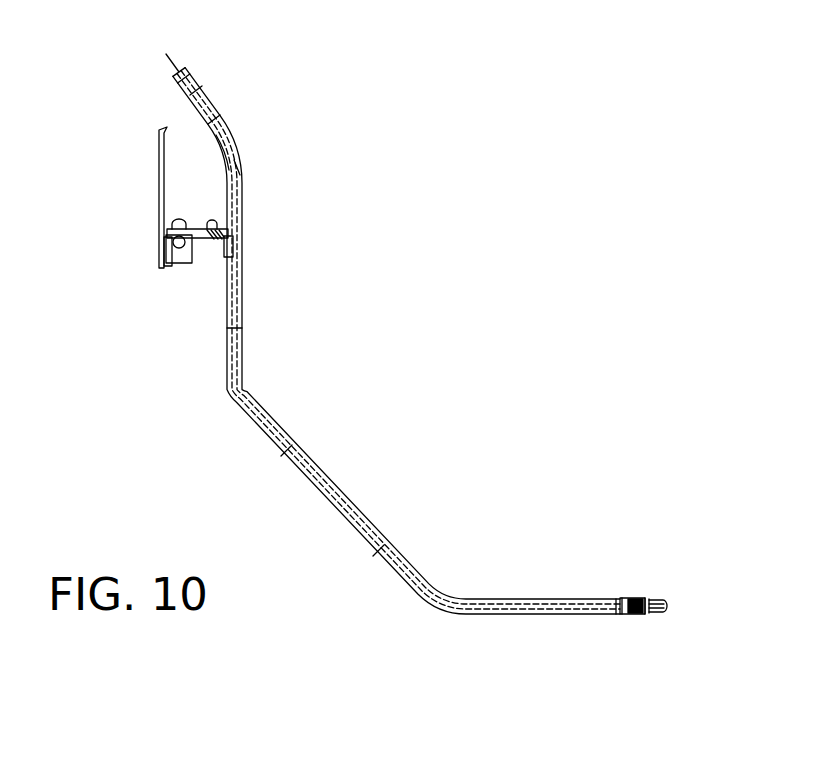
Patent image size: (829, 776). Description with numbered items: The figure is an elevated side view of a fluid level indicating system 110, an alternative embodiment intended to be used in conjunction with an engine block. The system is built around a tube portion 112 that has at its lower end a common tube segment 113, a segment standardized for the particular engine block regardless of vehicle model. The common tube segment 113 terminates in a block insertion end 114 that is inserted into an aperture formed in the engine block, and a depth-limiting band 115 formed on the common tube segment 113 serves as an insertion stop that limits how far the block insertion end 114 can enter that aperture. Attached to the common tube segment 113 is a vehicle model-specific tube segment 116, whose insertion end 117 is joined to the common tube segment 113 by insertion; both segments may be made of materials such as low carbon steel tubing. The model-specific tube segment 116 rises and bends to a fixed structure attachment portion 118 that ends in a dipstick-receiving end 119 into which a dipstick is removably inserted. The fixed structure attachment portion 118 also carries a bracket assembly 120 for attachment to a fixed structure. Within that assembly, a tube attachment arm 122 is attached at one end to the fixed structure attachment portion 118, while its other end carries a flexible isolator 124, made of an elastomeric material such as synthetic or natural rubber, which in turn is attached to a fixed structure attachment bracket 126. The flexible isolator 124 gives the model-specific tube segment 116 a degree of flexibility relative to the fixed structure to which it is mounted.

The fluid level indicating system 110 is at (362, 368).
The tube portion 112 is at (340, 503).
The common tube segment 113 is at (653, 597).
The block insertion end 114 is at (647, 615).
The depth-limiting band 115 is at (620, 617).
The vehicle model-specific tube segment 116 is at (317, 485).
The insertion end 117 is at (620, 600).
The fixed structure attachment portion 118 is at (228, 163).
The dipstick-receiving end 119 is at (183, 80).
The bracket assembly 120 is at (162, 253).
The tube attachment arm 122 is at (178, 263).
The flexible isolator 124 is at (157, 207).
The fixed structure attachment bracket 126 is at (157, 155).